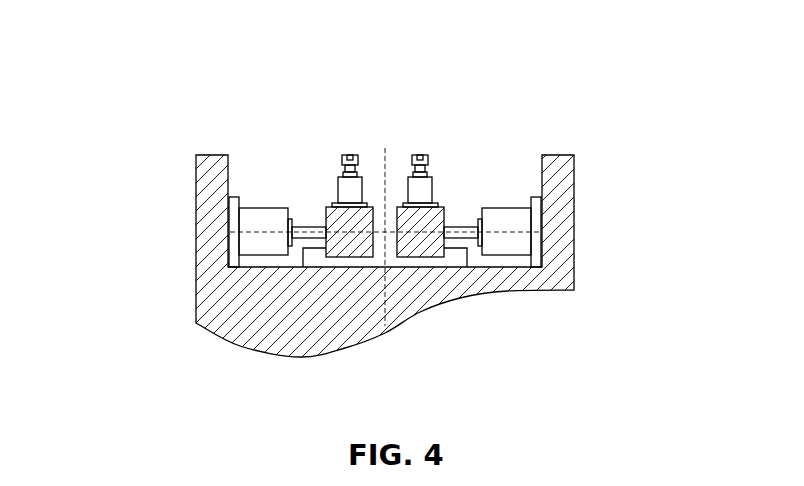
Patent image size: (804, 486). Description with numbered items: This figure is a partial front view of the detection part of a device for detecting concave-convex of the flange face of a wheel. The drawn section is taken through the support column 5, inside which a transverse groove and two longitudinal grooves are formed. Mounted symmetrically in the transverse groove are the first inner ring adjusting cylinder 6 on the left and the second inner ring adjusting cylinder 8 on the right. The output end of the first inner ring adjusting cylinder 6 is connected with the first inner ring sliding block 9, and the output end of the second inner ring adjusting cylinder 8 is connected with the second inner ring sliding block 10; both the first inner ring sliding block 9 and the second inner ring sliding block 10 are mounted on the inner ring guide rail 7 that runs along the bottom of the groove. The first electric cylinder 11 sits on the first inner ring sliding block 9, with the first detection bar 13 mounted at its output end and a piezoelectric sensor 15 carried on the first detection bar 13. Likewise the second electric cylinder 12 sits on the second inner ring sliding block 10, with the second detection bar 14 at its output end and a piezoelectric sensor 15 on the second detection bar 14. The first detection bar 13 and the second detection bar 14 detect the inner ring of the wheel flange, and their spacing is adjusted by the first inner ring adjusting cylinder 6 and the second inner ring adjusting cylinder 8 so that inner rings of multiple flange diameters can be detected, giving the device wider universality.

The support column 5 is at (245, 303).
The first inner ring adjusting cylinder 6 is at (245, 230).
The inner ring guide rail 7 is at (463, 257).
The second inner ring adjusting cylinder 8 is at (527, 232).
The first inner ring sliding block 9 is at (322, 212).
The second inner ring sliding block 10 is at (448, 211).
The first electric cylinder 11 is at (337, 190).
The second electric cylinder 12 is at (435, 190).
The first detection bar 13 is at (343, 157).
The second detection bar 14 is at (432, 152).
The piezoelectric sensor 15 is at (350, 155).